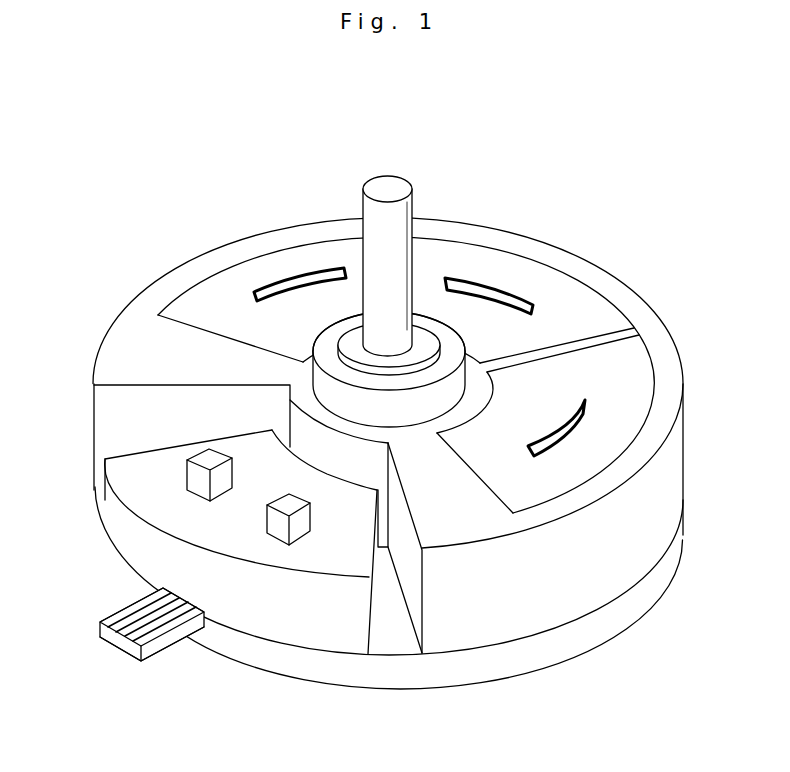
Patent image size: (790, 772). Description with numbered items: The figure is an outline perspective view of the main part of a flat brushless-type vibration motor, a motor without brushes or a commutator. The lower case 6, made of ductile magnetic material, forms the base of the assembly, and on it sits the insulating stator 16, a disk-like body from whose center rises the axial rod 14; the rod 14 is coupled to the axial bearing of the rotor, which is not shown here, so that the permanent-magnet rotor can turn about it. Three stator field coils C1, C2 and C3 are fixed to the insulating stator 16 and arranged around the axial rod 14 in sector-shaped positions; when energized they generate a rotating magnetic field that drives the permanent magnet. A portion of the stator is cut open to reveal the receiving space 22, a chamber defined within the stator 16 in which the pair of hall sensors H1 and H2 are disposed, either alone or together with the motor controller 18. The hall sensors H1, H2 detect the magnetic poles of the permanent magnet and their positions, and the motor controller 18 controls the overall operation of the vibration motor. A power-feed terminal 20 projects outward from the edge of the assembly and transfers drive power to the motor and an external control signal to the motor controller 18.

The lower case 6 is at (438, 673).
The axial rod 14 is at (398, 218).
The insulating stator 16 is at (670, 372).
The motor controller 18 is at (300, 627).
The power-feed terminal 20 is at (122, 617).
The receiving space 22 is at (397, 633).
The stator field coil C1 is at (265, 268).
The stator field coil C2 is at (503, 268).
The stator field coil C3 is at (630, 354).
The hall sensor H1 is at (200, 485).
The hall sensor H2 is at (283, 532).